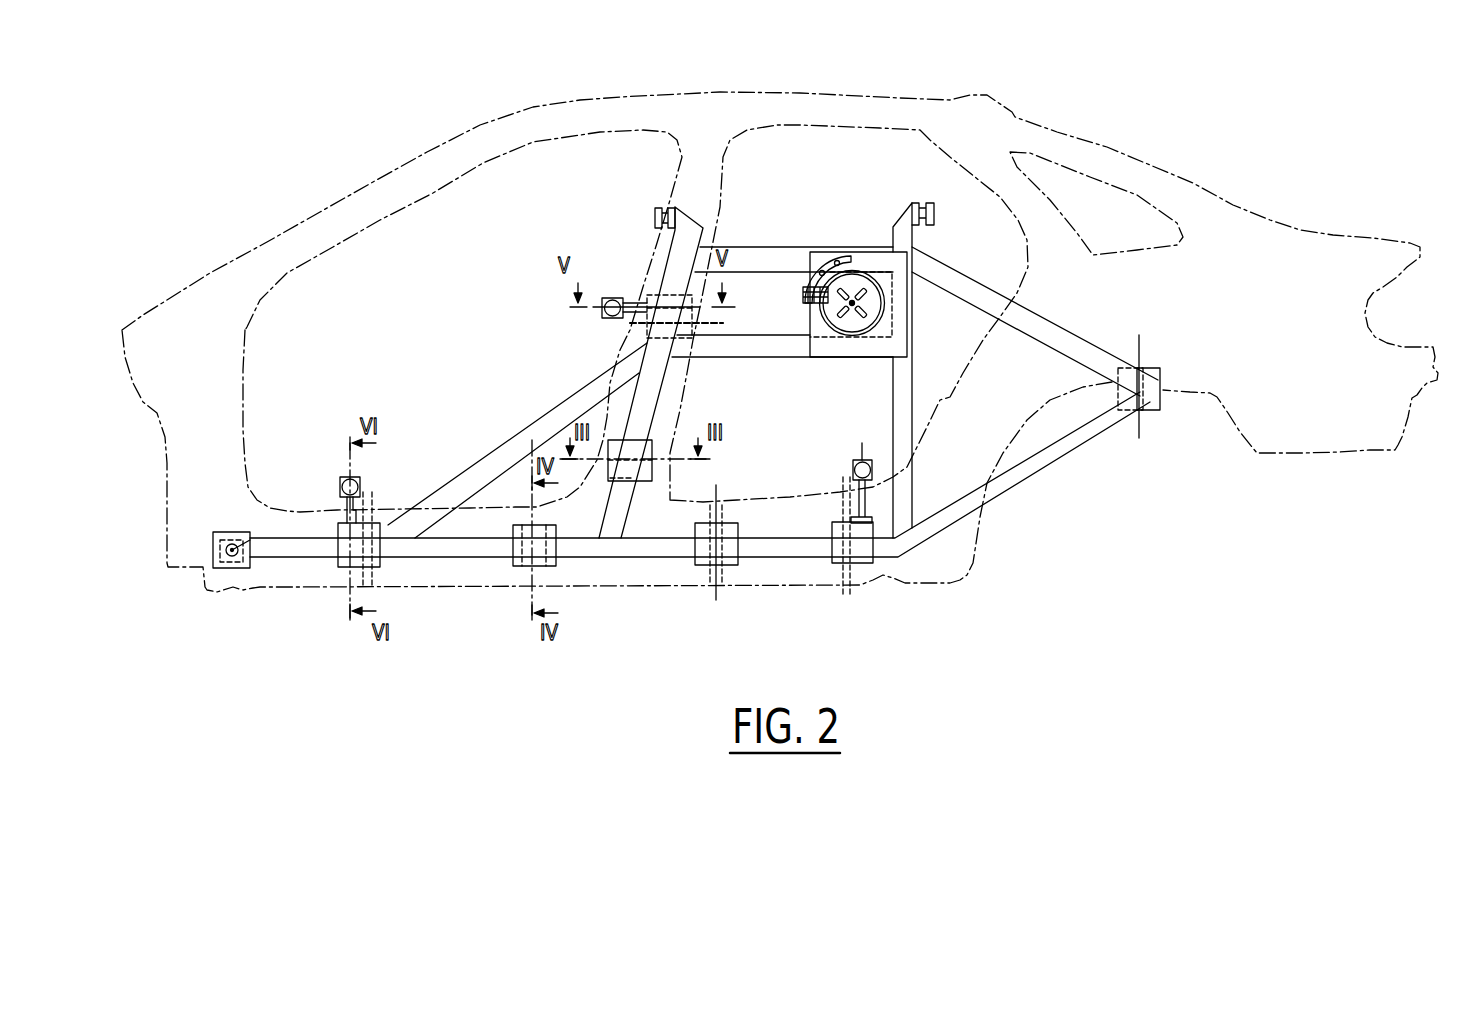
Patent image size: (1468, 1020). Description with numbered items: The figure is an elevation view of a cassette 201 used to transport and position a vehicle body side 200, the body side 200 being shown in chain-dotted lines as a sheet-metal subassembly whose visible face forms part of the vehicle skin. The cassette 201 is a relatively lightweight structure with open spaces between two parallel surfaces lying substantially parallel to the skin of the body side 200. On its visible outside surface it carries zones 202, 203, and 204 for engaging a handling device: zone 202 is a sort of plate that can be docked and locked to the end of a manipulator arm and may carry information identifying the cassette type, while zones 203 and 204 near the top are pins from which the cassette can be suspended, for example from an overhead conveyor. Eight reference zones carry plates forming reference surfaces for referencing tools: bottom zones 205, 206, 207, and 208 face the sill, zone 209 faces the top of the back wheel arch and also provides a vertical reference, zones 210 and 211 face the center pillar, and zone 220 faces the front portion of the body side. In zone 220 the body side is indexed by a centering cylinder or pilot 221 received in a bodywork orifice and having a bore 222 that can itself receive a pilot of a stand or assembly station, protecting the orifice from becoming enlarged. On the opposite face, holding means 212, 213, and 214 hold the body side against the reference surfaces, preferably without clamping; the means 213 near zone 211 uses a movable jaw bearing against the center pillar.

The body side 200 is at (731, 92).
The cassette 201 is at (764, 245).
The zone 202 is at (856, 260).
The zone 203 is at (655, 214).
The zone 204 is at (934, 212).
The bottom zone 205 is at (338, 565).
The bottom zone 206 is at (550, 563).
The bottom zone 207 is at (733, 560).
The bottom zone 208 is at (862, 558).
The zone 209 is at (1160, 388).
The zone 210 is at (660, 445).
The zone 211 is at (688, 340).
The holding means 212 is at (360, 480).
The holding means 213 is at (598, 312).
The holding means 214 is at (862, 458).
The zone 220 is at (227, 570).
The centering cylinder 221 is at (228, 535).
The bore 222 is at (252, 536).